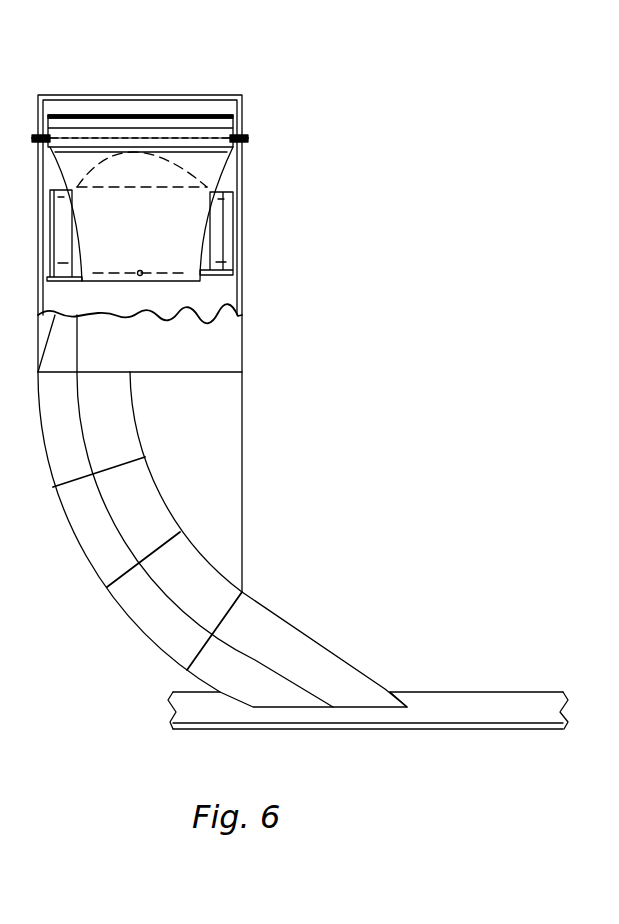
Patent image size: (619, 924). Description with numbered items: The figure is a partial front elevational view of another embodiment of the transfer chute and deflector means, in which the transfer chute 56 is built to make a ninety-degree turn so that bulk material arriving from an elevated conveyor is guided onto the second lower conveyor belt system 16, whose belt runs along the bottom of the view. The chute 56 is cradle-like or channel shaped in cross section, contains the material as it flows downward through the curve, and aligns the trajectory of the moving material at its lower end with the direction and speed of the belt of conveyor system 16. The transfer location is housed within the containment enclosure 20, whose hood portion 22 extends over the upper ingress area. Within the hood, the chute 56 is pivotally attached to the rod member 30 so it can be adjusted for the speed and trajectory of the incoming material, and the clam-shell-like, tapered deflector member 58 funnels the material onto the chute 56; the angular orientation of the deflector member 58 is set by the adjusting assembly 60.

The second lower conveyor belt system 16 is at (503, 728).
The containment enclosure 20 is at (243, 228).
The hood portion 22 is at (83, 95).
The rod member 30 is at (248, 137).
The transfer chute 56 is at (79, 536).
The deflector member 58 is at (238, 268).
The adjusting assembly 60 is at (140, 271).